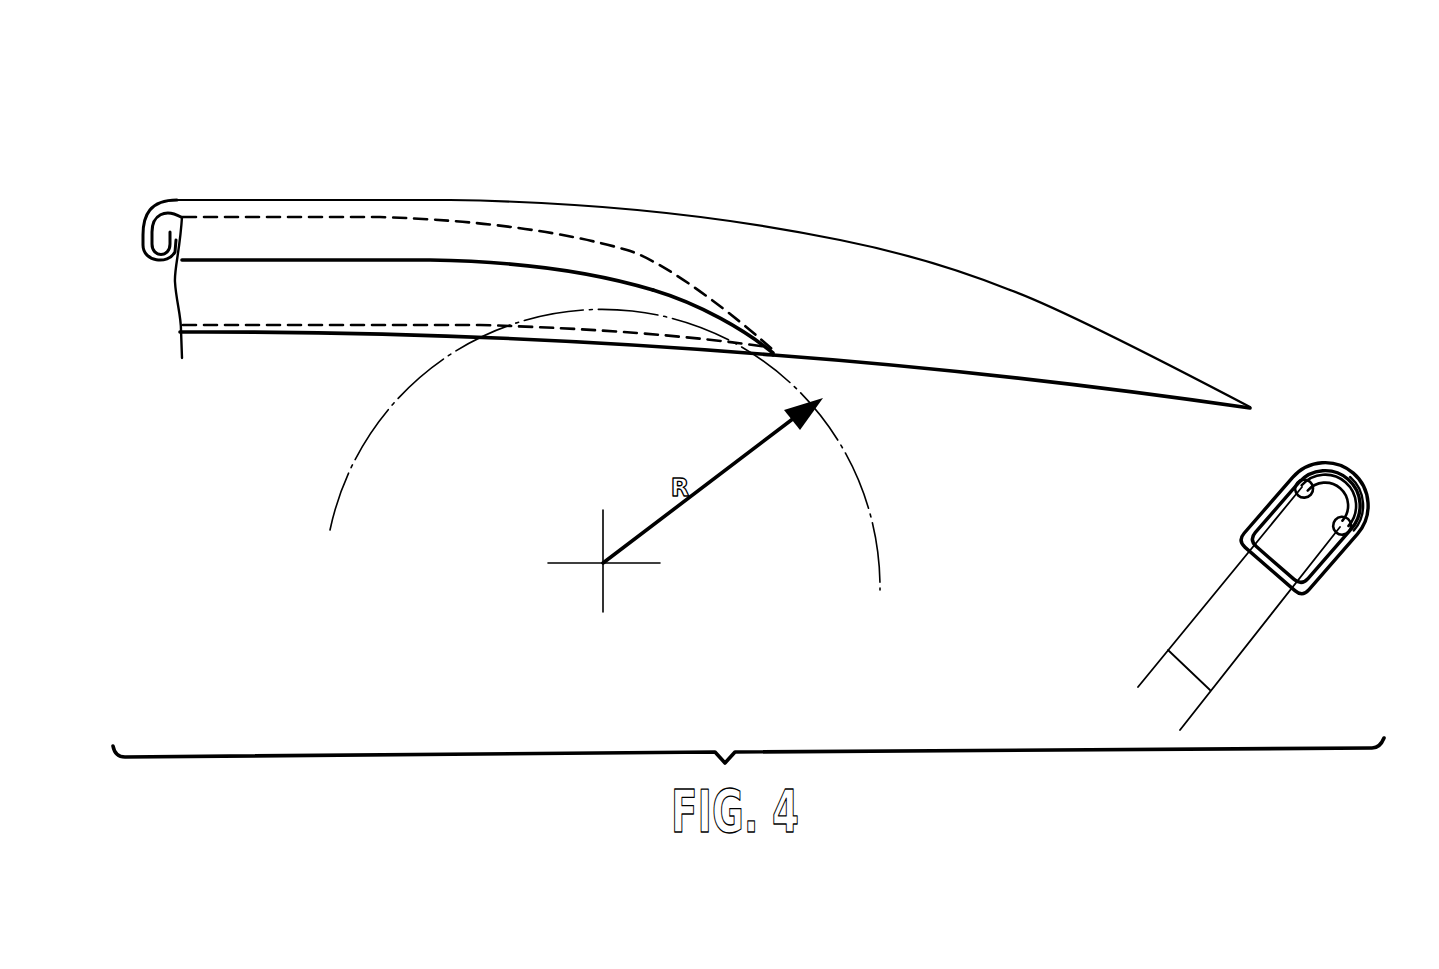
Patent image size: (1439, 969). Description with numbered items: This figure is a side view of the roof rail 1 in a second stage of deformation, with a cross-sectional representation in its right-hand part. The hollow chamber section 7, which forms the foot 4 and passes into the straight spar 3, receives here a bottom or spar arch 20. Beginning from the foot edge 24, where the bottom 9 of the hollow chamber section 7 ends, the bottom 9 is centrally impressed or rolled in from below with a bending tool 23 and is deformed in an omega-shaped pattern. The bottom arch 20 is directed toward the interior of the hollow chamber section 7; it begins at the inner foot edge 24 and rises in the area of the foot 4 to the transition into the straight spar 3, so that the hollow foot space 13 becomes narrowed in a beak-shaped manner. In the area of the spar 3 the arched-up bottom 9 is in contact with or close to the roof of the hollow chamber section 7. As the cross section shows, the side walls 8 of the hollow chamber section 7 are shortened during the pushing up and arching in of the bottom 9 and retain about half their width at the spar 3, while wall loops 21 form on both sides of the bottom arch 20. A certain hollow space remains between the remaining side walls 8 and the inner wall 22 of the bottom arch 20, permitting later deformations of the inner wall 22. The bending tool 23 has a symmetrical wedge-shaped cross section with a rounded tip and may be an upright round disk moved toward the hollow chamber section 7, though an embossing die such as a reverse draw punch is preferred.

The cover assembly 1 is at (233, 152).
The spar 3 is at (298, 200).
The foot 4 is at (1125, 343).
The hollow chamber section 7 is at (920, 258).
The side walls 8 is at (1255, 517).
The bottom 9 is at (1238, 557).
The hollow foot space 13 is at (953, 348).
The bottom arch 20 is at (628, 250).
The wall loops 21 is at (143, 232).
The inner wall 22 is at (180, 270).
The bending tool 23 is at (880, 532).
The foot edge 24 is at (785, 360).